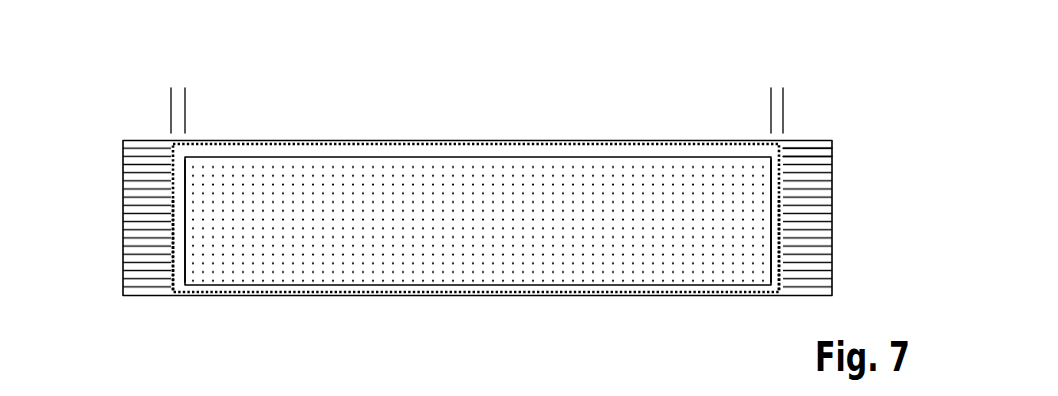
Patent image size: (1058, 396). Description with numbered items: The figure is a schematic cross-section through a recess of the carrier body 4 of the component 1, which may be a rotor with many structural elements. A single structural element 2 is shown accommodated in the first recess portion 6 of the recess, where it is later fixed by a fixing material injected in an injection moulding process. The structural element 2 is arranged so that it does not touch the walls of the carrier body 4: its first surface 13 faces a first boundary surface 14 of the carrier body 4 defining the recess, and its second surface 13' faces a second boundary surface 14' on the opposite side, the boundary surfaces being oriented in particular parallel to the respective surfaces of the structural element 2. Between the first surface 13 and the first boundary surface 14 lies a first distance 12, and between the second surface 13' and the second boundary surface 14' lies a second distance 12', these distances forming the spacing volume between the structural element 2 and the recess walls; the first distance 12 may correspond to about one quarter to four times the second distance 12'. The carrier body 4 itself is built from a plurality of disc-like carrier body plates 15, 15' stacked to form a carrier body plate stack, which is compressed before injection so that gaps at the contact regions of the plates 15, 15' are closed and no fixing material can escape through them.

The component 1 is at (806, 80).
The structural element 2 is at (436, 180).
The carrier body 4 is at (920, 123).
The first recess portion 6 is at (488, 297).
The first distance 12 is at (181, 83).
The second distance 12' is at (774, 83).
The first surface 13 is at (120, 221).
The second surface 13' is at (842, 221).
The first boundary surface 14 is at (197, 269).
The second boundary surface 14' is at (757, 269).
The carrier body plate 15 is at (846, 141).
The carrier body plate 15' is at (848, 172).